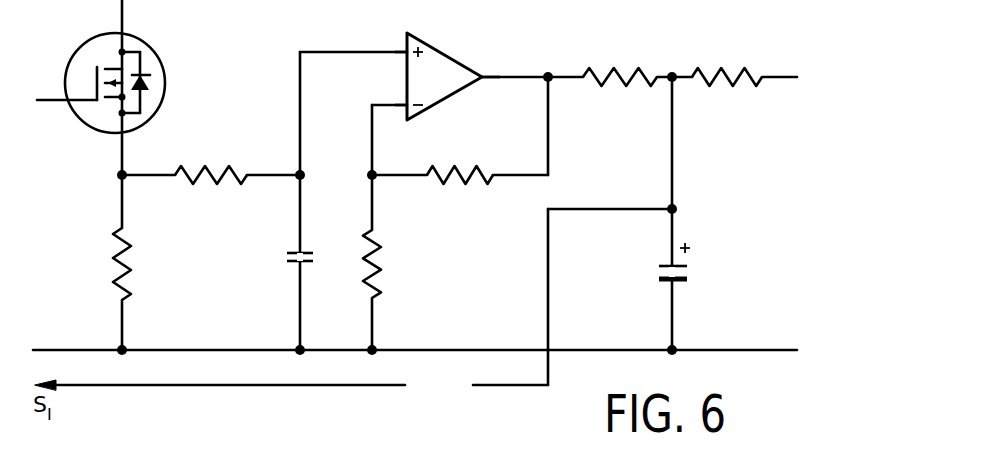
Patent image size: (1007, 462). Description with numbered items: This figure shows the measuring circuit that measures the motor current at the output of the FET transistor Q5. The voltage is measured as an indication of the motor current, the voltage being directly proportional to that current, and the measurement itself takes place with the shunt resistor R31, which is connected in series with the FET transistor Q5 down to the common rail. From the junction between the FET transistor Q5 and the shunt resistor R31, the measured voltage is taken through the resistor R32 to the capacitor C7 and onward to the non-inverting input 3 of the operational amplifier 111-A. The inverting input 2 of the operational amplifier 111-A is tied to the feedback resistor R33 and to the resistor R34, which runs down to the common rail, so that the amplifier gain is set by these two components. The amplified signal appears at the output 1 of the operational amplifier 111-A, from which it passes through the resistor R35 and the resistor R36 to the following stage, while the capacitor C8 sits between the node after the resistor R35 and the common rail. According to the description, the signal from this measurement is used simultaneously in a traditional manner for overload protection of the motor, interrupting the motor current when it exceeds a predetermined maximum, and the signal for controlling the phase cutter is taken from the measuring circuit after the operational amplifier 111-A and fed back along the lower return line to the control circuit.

The FET transistor Q5 is at (120, 83).
The shunt resistor R31 is at (101, 264).
The resistor R32 is at (211, 160).
The feedback resistor R33 is at (460, 189).
The resistor R34 is at (394, 264).
The resistor R35 is at (620, 61).
The resistor R36 is at (727, 61).
The capacitor C7 is at (283, 258).
The electrolytic capacitor C8 is at (657, 262).
The operational amplifier 111-A is at (444, 66).
The op-amp output pin 1 is at (491, 64).
The op-amp inverting input pin 2 is at (393, 91).
The op-amp non-inverting input pin 3 is at (393, 39).